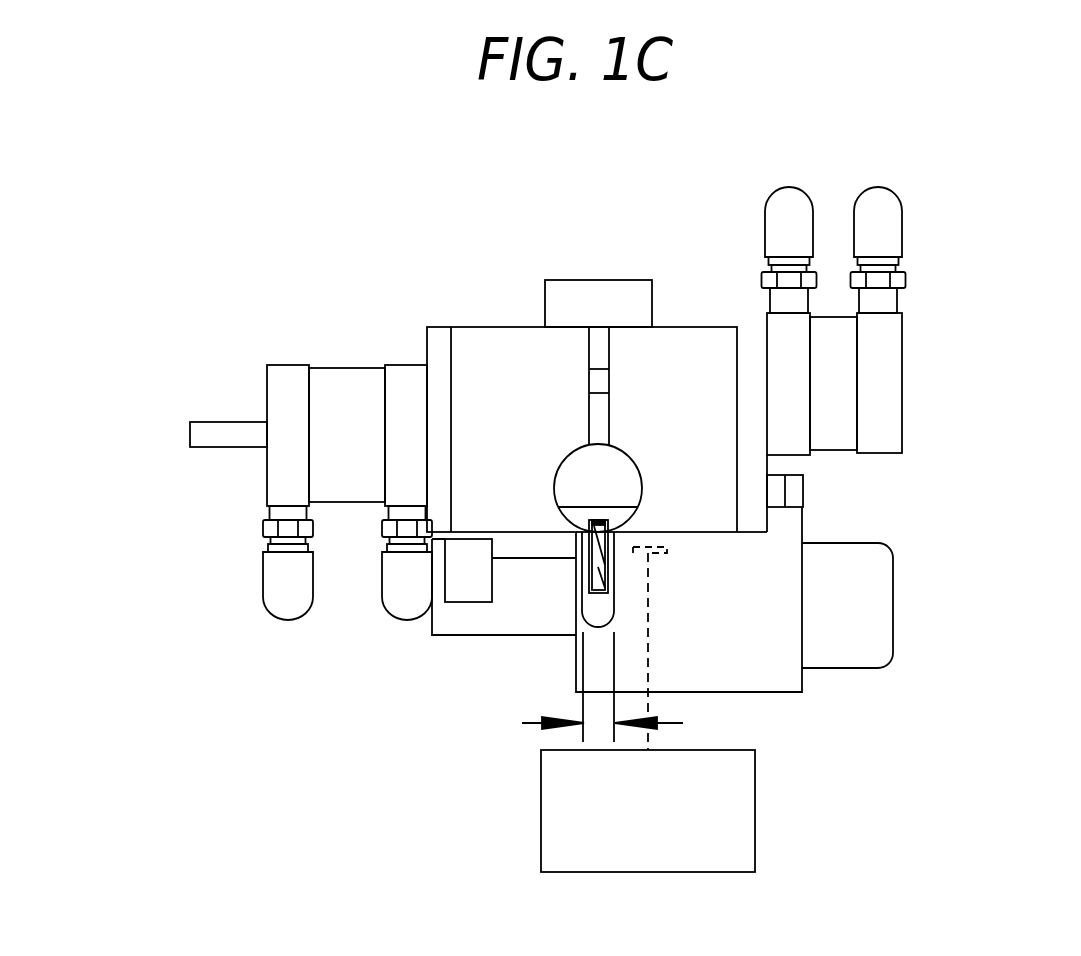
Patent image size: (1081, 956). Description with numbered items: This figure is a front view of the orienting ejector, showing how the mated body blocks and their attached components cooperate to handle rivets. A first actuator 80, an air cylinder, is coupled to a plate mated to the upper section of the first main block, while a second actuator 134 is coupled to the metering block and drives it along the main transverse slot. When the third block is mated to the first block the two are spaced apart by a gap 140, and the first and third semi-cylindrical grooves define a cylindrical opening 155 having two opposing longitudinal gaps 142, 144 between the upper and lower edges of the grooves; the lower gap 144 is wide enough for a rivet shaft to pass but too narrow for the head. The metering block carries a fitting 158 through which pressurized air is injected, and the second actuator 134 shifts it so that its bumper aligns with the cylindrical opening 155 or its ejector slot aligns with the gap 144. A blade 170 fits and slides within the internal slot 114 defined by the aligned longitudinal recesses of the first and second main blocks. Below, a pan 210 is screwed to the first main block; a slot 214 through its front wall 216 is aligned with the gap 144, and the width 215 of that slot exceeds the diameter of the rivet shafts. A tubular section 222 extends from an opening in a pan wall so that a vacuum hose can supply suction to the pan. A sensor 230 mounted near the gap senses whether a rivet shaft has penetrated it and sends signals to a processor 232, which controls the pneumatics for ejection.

The first actuator 80 is at (882, 372).
The internal slot 114 is at (597, 595).
The second actuator 134 is at (307, 390).
The gap 140 is at (598, 341).
The longitudinal slot or gap 142 is at (597, 443).
The longitudinal slot or gap 144 is at (612, 565).
The cylindrical opening 155 is at (597, 474).
The fitting 158 is at (462, 573).
The blade 170 is at (613, 597).
The pan 210 is at (783, 680).
The slot 214 is at (602, 600).
The width 215 is at (530, 723).
The front wall 216 is at (695, 680).
The tubular section 222 is at (868, 562).
The sensor 230 is at (667, 547).
The processor 232 is at (740, 803).